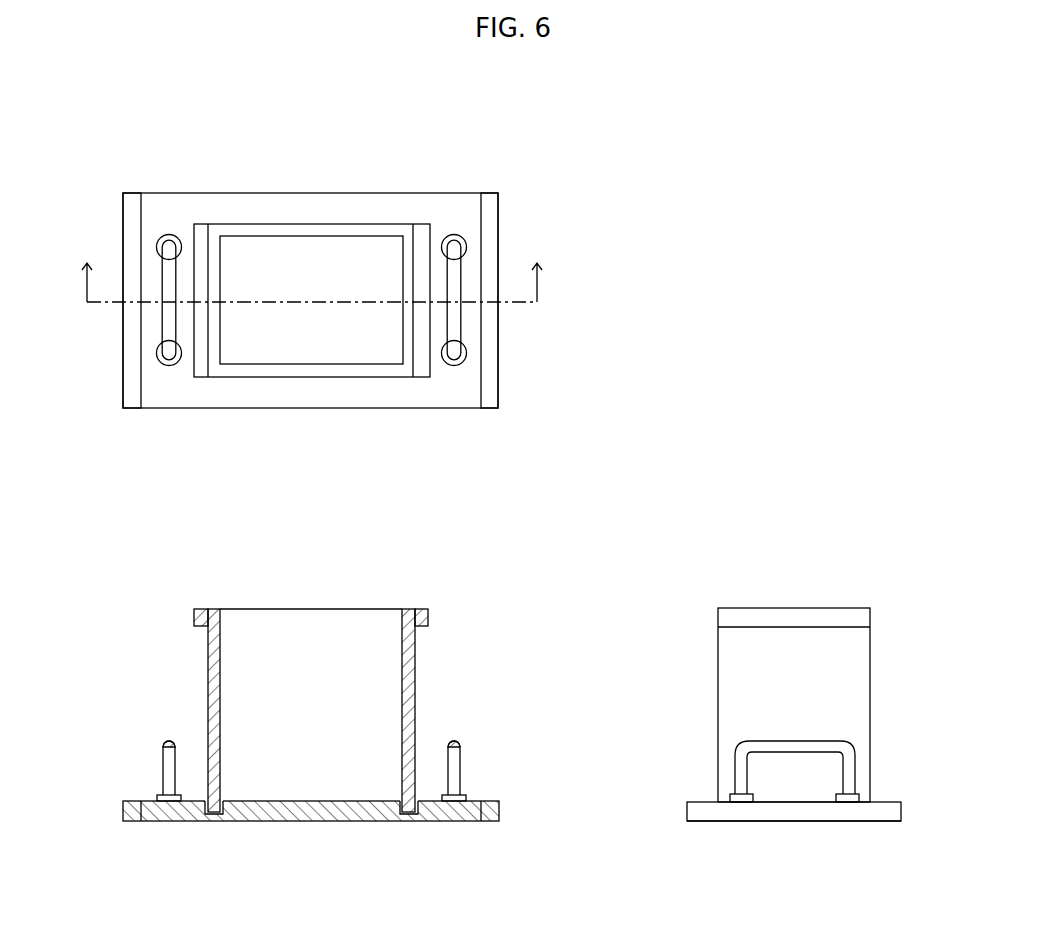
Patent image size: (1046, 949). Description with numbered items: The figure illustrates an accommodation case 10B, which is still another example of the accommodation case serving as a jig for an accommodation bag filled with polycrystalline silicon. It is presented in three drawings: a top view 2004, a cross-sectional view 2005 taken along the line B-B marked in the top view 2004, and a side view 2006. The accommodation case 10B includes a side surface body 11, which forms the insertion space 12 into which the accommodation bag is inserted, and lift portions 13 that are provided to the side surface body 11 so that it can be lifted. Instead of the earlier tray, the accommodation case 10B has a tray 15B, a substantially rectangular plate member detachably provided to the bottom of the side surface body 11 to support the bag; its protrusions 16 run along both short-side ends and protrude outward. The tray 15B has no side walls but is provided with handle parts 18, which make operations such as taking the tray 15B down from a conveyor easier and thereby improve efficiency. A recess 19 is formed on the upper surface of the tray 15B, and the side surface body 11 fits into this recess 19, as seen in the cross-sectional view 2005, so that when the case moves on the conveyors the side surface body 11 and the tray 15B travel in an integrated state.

The accommodation case 10B is at (123, 170).
The side surface body 11 is at (313, 230).
The insertion space 12 is at (306, 671).
The lift portions 13 is at (422, 367).
The tray 15B is at (443, 197).
The protrusions 16 is at (130, 380).
The handle parts 18 is at (168, 345).
The recess 19 is at (410, 807).
The top view 2004 is at (481, 125).
The cross-sectional view 2005 is at (483, 567).
The side view 2006 is at (898, 568).